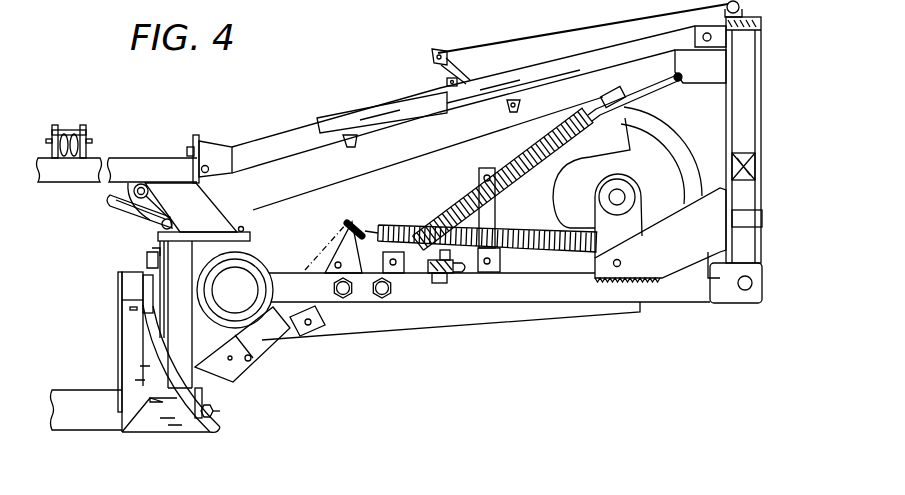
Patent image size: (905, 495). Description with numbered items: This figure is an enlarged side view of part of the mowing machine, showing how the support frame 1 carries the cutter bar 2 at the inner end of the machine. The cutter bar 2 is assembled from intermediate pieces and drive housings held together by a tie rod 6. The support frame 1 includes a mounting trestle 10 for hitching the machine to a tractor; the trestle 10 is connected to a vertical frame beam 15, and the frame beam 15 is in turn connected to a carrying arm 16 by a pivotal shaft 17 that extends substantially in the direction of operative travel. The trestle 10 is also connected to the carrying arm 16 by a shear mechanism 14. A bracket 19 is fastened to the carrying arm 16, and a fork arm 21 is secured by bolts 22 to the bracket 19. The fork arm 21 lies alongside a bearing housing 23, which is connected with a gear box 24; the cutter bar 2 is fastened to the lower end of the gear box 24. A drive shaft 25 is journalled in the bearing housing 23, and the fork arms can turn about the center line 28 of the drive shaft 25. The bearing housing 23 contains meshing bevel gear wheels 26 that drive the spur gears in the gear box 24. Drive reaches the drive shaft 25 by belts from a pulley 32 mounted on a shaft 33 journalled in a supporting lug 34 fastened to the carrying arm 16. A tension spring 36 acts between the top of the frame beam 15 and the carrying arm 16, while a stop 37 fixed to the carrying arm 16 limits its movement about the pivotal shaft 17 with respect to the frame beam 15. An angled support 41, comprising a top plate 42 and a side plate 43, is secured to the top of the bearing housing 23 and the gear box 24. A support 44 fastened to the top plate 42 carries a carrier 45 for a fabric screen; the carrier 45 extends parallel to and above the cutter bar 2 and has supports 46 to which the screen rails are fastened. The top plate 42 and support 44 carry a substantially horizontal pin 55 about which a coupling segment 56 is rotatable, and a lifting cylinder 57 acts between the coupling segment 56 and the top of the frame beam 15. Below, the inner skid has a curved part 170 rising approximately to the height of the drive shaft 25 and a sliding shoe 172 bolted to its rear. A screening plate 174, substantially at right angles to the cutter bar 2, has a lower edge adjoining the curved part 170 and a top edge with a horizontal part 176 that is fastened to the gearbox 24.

The support frame 1 is at (366, 84).
The cutter bar 2 is at (88, 444).
The tie rod 6 is at (214, 408).
The mounting trestle 10 is at (732, 107).
The shear mechanism 14 is at (462, 273).
The vertical frame beam 15 is at (727, 232).
The carrying arm 16 is at (683, 290).
The pivotal shaft 17 is at (745, 290).
The bracket 19 is at (405, 297).
The fork arm 21 is at (380, 300).
The bolts 22 is at (343, 298).
The bearing housing 23 is at (262, 265).
The gear box 24 is at (174, 338).
The drive shaft 25 is at (346, 187).
The bevel gear wheels 26 is at (451, 247).
The center line 28 is at (236, 291).
The pulley 32 is at (686, 155).
The shaft 33 is at (619, 195).
The supporting lug 34 is at (594, 215).
The tension spring 36 is at (447, 212).
The stop 37 is at (676, 228).
The angled support 41 is at (193, 219).
The top plate 42 is at (252, 229).
The side plate 43 is at (147, 256).
The support 44 is at (203, 206).
The carrier 45 is at (90, 168).
The supports 46 is at (74, 160).
The horizontal pin 55 is at (160, 228).
The coupling segment 56 is at (131, 185).
The lifting cylinder 57 is at (533, 73).
The curved part 170 is at (135, 352).
The sliding shoe 172 is at (156, 430).
The screening plate 174 is at (120, 330).
The horizontal part 176 is at (120, 274).